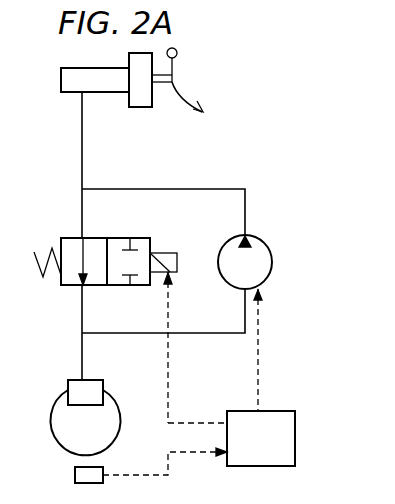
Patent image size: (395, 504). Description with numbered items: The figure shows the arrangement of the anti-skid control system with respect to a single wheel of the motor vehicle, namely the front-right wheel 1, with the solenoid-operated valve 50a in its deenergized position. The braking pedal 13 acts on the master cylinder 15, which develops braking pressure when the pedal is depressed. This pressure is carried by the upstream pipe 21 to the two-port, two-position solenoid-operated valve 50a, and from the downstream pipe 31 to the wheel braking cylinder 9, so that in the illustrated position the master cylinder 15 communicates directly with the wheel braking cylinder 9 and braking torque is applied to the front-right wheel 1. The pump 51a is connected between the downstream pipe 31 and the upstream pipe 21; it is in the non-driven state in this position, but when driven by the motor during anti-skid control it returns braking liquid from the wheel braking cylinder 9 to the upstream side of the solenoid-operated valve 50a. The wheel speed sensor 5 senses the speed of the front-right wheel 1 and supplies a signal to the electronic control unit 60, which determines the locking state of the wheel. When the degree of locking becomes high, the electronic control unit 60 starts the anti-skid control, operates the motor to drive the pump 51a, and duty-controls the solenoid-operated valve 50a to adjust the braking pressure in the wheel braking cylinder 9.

The master cylinder 15 is at (61, 77).
The braking pedal 13 is at (178, 66).
The pipe 21 is at (82, 146).
The solenoid-operated valve 50a is at (97, 237).
The pump 51a is at (265, 245).
The pipe 31 is at (82, 355).
The wheel braking cylinder 9 is at (97, 380).
The front-right wheel 1 is at (122, 414).
The wheel speed sensor 5 is at (75, 475).
The electronic control unit 60 is at (295, 428).